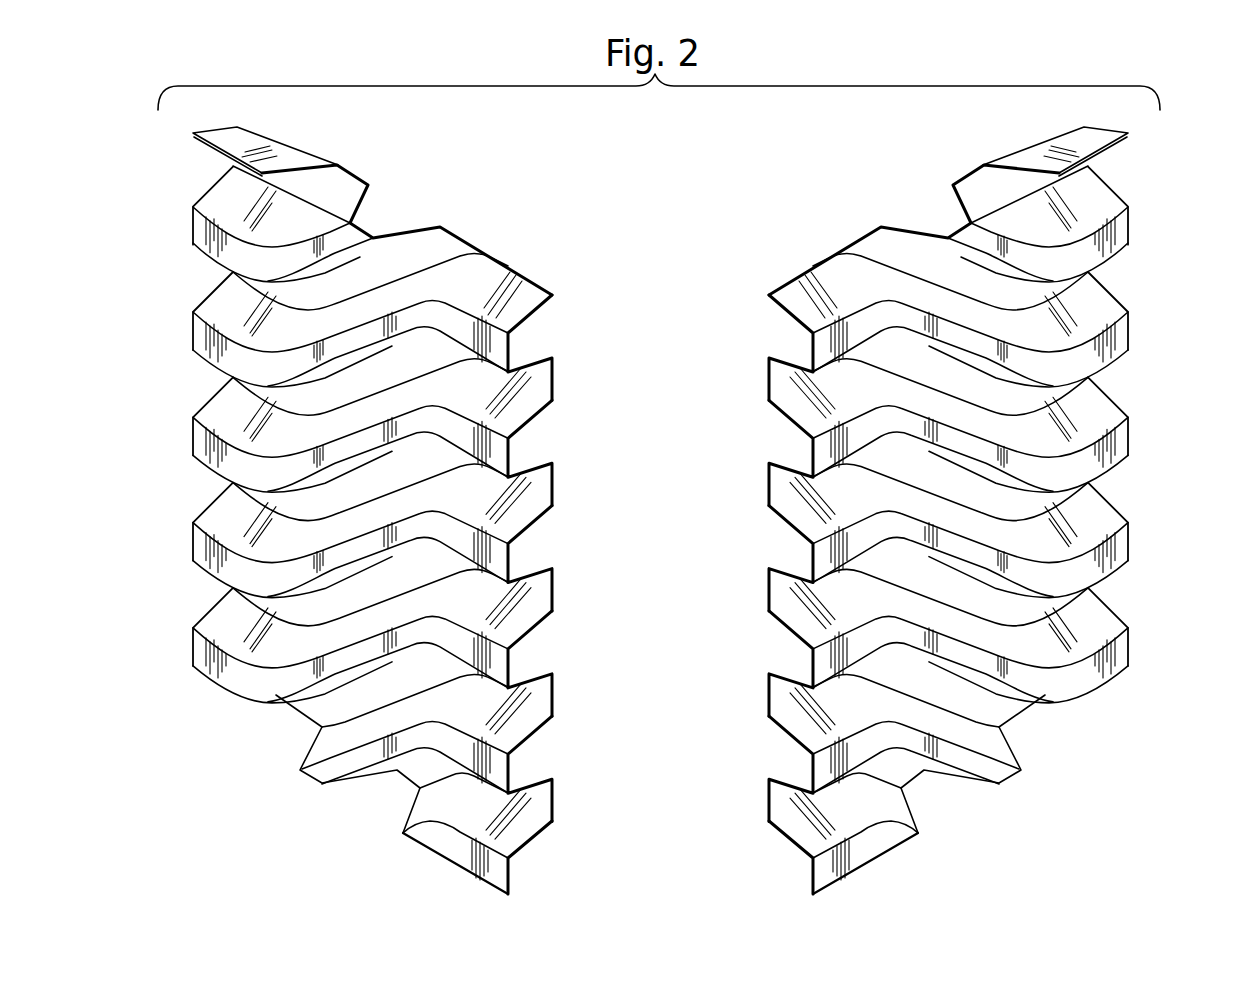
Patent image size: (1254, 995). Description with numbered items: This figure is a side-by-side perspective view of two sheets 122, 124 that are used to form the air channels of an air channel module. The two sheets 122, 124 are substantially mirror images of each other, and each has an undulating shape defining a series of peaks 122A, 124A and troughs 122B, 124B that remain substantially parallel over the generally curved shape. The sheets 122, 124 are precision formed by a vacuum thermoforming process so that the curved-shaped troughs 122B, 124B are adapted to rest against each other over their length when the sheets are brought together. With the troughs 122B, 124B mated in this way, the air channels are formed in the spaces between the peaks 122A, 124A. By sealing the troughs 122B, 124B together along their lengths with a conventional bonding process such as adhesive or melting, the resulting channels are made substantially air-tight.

The sheet 122 is at (374, 510).
The peaks 122A is at (192, 228).
The troughs 122B is at (553, 378).
The sheet 124 is at (947, 510).
The peaks 124A is at (1129, 229).
The troughs 124B is at (768, 378).